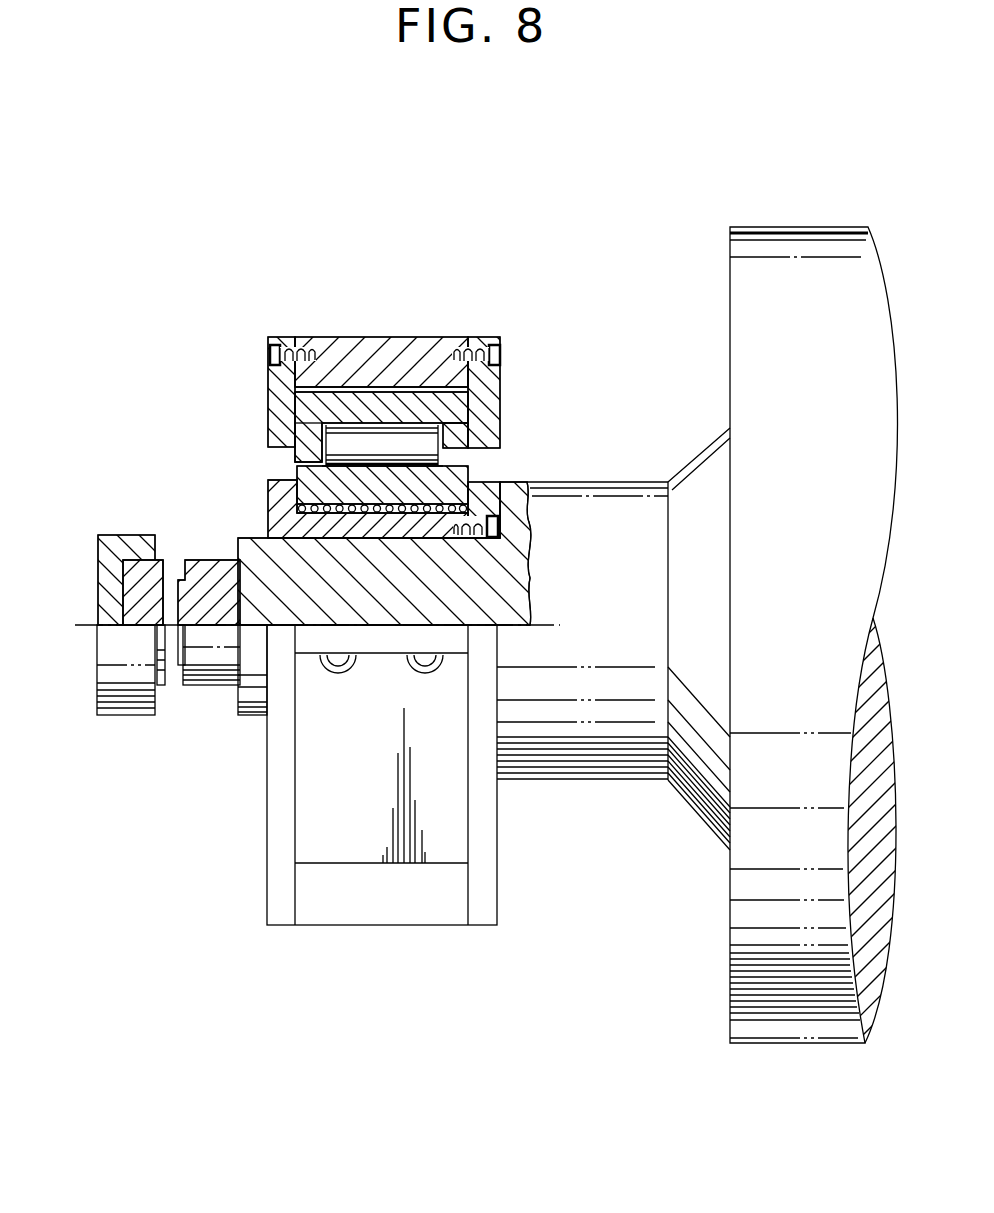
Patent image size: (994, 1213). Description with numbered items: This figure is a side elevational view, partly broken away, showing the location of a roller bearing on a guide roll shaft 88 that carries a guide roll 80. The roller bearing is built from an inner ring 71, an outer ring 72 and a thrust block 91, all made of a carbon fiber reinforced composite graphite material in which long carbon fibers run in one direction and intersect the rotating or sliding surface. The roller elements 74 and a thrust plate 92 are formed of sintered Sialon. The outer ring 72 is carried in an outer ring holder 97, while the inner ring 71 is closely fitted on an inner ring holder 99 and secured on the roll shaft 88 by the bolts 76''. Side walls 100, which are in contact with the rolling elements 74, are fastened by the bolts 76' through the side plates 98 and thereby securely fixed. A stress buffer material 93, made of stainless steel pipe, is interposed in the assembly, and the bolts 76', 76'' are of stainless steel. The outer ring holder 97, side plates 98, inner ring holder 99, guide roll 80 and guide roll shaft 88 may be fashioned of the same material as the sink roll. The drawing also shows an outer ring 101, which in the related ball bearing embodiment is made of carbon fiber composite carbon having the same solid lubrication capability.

The guide roll 80 is at (792, 245).
The guide roll shaft 88 is at (642, 523).
The outer ring holder 97 is at (375, 348).
The side plates 98 is at (268, 430).
The bolts 76' is at (400, 319).
The outer ring 72 is at (415, 407).
The side walls 100 is at (295, 410).
The roller elements 74 is at (470, 433).
The inner ring 71 is at (467, 477).
The inner ring holder 99 is at (300, 497).
The stress buffer material 93 is at (445, 484).
The bolts 76'' is at (556, 481).
The thrust block 91 is at (133, 600).
The thrust plate 92 is at (168, 640).
The outer ring 101 is at (252, 717).